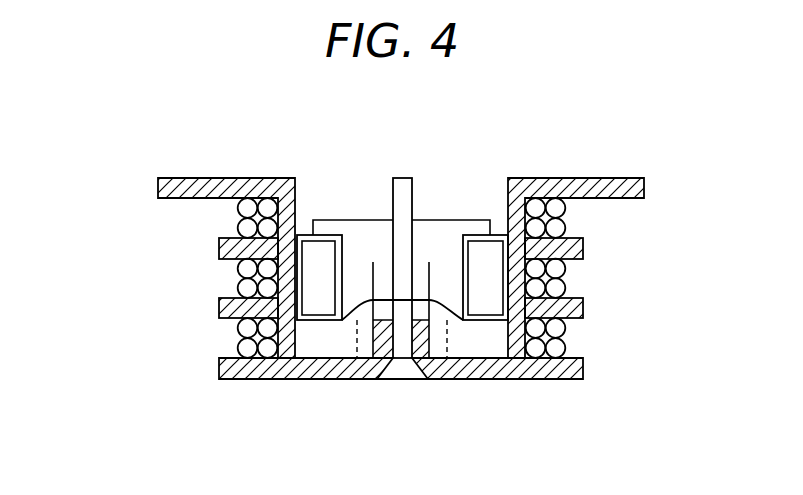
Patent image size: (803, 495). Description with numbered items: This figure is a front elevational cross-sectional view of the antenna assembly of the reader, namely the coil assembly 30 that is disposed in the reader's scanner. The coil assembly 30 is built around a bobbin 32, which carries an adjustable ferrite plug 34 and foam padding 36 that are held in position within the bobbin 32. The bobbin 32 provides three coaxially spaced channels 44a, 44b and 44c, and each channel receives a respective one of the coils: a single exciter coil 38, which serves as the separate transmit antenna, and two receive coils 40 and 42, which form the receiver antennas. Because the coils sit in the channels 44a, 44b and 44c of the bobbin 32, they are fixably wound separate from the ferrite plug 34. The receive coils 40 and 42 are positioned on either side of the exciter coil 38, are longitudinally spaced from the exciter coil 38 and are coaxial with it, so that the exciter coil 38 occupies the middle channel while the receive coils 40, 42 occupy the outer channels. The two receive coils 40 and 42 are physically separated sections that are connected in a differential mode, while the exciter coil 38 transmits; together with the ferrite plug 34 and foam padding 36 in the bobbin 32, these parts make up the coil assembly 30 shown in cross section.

The coil assembly 30 is at (226, 210).
The bobbin 32 is at (625, 268).
The adjustable ferrite plug 34 is at (403, 218).
The foam padding 36 is at (401, 404).
The exciter coil 38 is at (633, 298).
The receive coil 40 is at (633, 243).
The receive coil 42 is at (634, 361).
The channel 44a is at (165, 232).
The channel 44b is at (165, 292).
The channel 44c is at (164, 351).